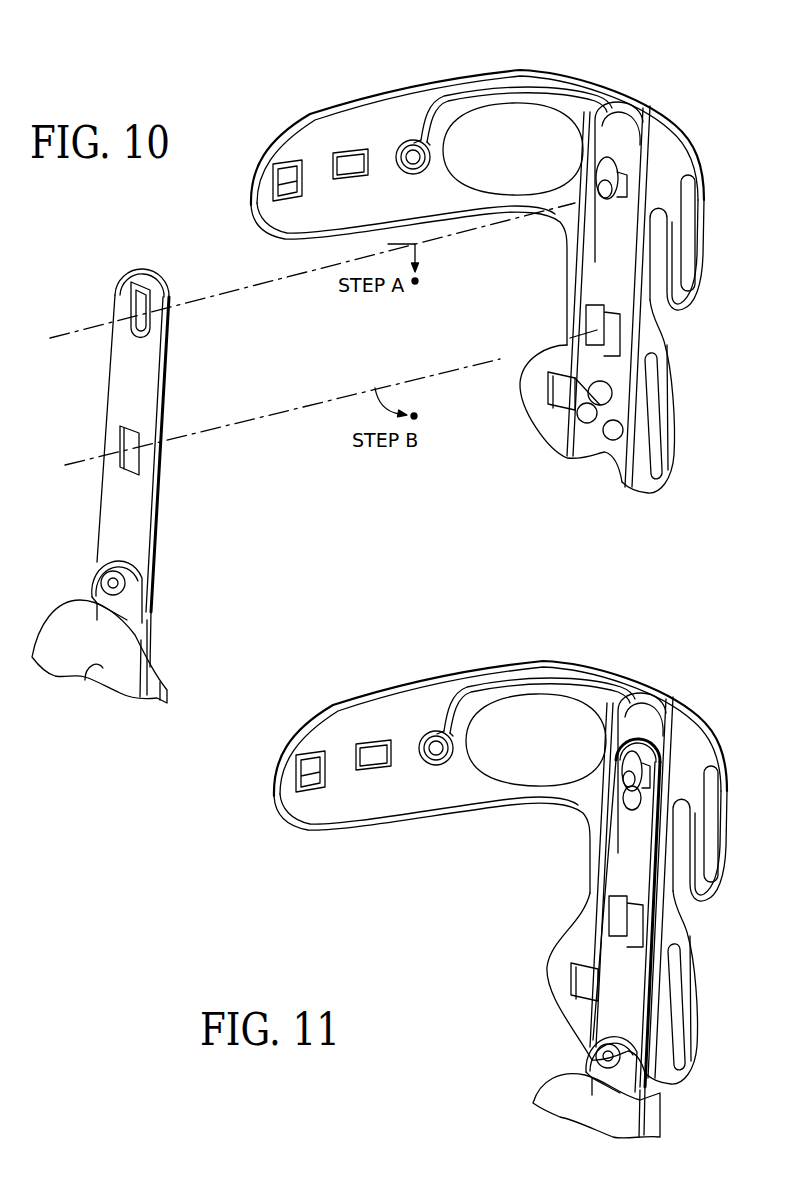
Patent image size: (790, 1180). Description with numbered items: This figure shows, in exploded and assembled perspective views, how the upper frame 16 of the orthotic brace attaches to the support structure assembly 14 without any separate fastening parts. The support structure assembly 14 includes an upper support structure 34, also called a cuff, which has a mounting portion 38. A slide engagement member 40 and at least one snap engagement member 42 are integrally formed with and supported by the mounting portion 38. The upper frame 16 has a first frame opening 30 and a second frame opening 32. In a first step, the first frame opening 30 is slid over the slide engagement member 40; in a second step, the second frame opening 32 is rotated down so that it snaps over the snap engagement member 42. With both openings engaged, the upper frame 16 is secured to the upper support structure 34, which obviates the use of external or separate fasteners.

In FIG. 10, the support structure assembly 14 is at (477, 260).
In FIG. 10, the upper frame 16 is at (105, 450).
In FIG. 11, the upper frame 16 is at (598, 884).
In FIG. 10, the first frame opening 30 is at (135, 300).
In FIG. 11, the first frame opening 30 is at (633, 800).
In FIG. 10, the second frame opening 32 is at (125, 432).
In FIG. 11, the second frame opening 32 is at (543, 982).
In FIG. 10, the upper support structure 34 is at (520, 66).
In FIG. 11, the upper support structure 34 is at (500, 699).
In FIG. 10, the mounting portion 38 is at (619, 135).
In FIG. 11, the mounting portion 38 is at (638, 736).
In FIG. 10, the slide engagement member 40 is at (602, 170).
In FIG. 11, the slide engagement member 40 is at (582, 797).
In FIG. 10, the snap engagement member 42 is at (593, 318).
In FIG. 11, the snap engagement member 42 is at (565, 921).